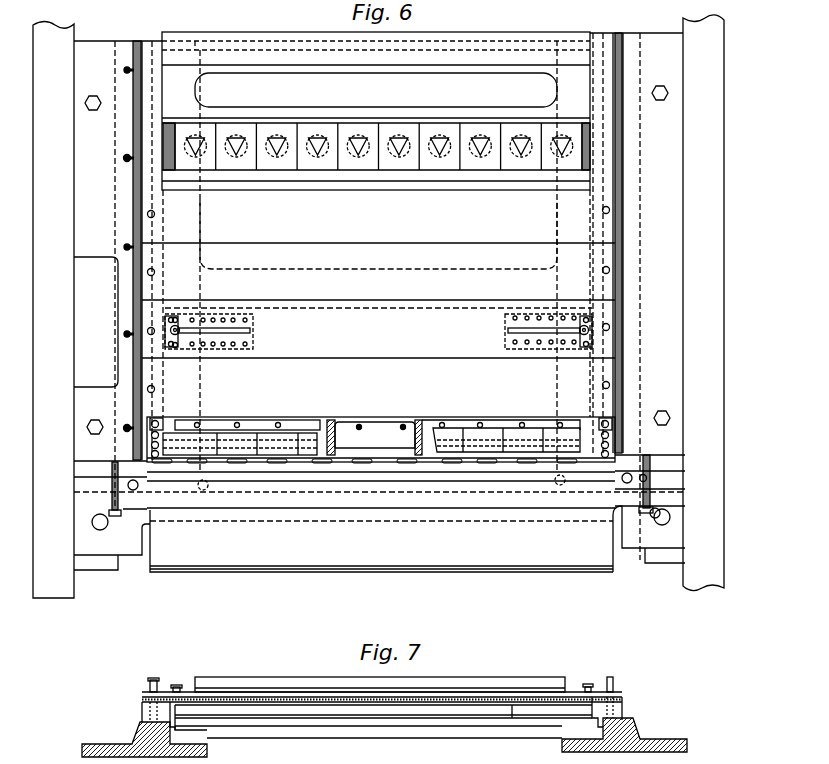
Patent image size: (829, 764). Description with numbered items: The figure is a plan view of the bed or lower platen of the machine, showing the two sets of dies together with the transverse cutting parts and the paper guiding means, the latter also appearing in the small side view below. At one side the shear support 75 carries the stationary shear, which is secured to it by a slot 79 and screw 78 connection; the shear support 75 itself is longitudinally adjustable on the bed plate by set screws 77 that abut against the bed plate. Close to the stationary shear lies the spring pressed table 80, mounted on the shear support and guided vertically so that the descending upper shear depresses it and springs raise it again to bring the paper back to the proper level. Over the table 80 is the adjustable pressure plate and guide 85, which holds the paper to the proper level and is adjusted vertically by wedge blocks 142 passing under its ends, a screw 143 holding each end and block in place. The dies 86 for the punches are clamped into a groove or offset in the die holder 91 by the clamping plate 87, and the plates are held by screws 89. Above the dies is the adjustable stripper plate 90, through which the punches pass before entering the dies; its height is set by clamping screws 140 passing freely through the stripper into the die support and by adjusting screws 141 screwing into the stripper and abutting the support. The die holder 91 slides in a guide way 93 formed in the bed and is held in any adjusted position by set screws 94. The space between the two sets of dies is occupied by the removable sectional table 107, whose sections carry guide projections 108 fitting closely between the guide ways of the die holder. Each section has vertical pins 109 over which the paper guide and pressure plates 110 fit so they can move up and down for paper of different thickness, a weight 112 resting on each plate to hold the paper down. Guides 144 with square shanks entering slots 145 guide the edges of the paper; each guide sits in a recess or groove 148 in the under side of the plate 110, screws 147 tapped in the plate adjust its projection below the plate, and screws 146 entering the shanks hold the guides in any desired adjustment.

In FIG. 6, the shear support 75 is at (387, 493).
In FIG. 6, the set screws 77 is at (379, 494).
In FIG. 6, the screw 78 is at (109, 524).
In FIG. 6, the slot 79 is at (104, 530).
In FIG. 6, the spring pressed table 80 is at (381, 541).
In FIG. 6, the adjustable pressure plate and guide 85 is at (379, 490).
In FIG. 6, the dies 86 is at (375, 435).
In FIG. 6, the clamping plate 87 is at (331, 419).
In FIG. 6, the screws 89 is at (441, 422).
In FIG. 6, the adjustable stripper plate 90 is at (506, 440).
In FIG. 6, the die holder 91 is at (370, 424).
In FIG. 7, the guide way 93 is at (368, 733).
In FIG. 6, the set screws 94 is at (124, 158).
In FIG. 7, the removable sectional table 107 is at (512, 718).
In FIG. 7, the guide projections 108 is at (172, 731).
In FIG. 6, the vertical pins 109 is at (150, 388).
In FIG. 7, the vertical pins 109 is at (615, 684).
In FIG. 6, the paper guide and pressure plates 110 is at (378, 260).
In FIG. 7, the paper guide and pressure plates 110 is at (600, 684).
In FIG. 7, the weight 112 is at (266, 685).
In FIG. 6, the clamping screws 140 is at (609, 423).
In FIG. 6, the adjusting screws 141 is at (609, 436).
In FIG. 6, the wedge blocks 142 is at (132, 480).
In FIG. 6, the screw 143 is at (138, 488).
In FIG. 6, the guides 144 is at (215, 335).
In FIG. 6, the slots 145 is at (250, 343).
In FIG. 6, the screws 146 is at (189, 325).
In FIG. 6, the screws 147 is at (176, 318).
In FIG. 6, the recess or groove 148 is at (250, 321).